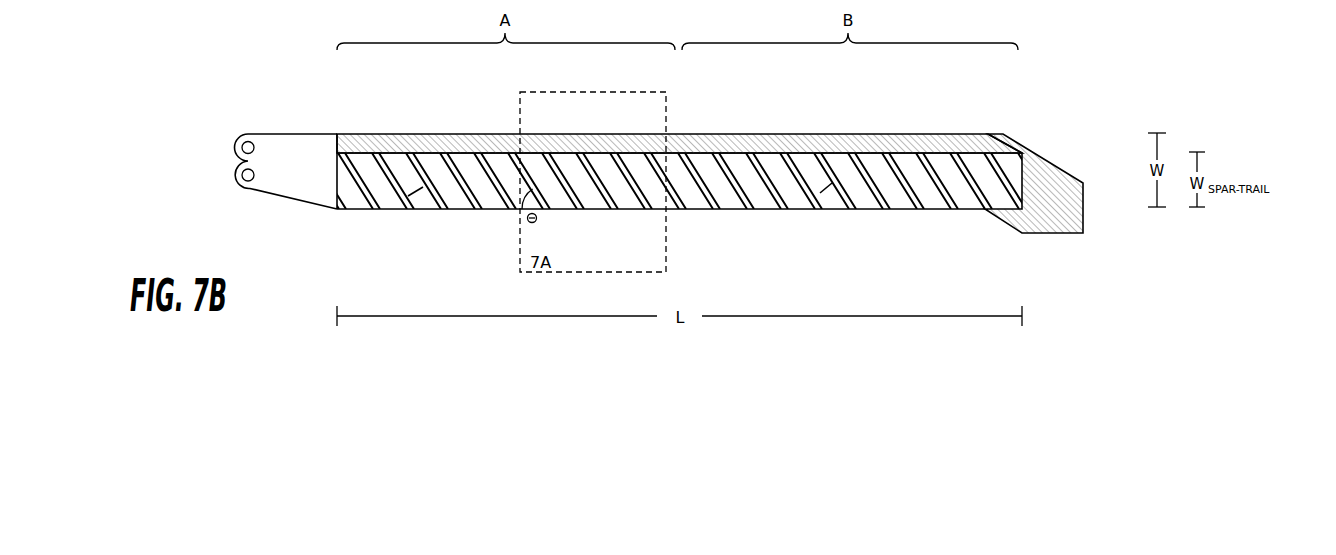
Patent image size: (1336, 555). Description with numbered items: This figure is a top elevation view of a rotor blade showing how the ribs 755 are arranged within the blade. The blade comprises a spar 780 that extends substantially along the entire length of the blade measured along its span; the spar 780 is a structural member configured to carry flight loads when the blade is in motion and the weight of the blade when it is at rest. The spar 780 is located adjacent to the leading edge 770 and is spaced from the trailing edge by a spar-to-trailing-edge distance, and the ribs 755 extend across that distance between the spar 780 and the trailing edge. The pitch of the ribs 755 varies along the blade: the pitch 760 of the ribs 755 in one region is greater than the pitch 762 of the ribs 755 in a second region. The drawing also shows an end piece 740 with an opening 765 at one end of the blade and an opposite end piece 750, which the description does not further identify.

The root end fitting 740 is at (292, 133).
The attachment opening 765 is at (251, 181).
The ribs 755 is at (465, 182).
The pitch 760 is at (416, 195).
The pitch 762 is at (829, 192).
The leading edge 770 is at (929, 131).
The spar 780 is at (843, 141).
The tip end fitting 750 is at (1043, 155).